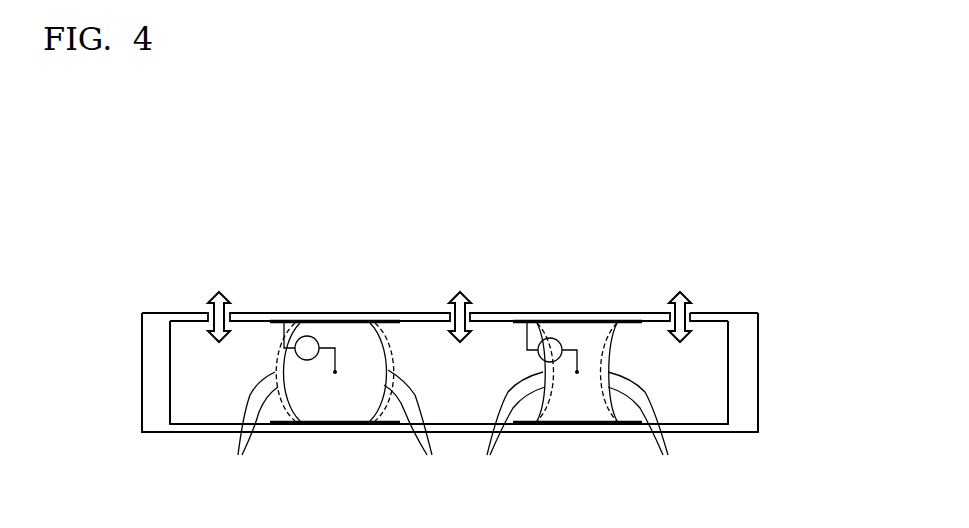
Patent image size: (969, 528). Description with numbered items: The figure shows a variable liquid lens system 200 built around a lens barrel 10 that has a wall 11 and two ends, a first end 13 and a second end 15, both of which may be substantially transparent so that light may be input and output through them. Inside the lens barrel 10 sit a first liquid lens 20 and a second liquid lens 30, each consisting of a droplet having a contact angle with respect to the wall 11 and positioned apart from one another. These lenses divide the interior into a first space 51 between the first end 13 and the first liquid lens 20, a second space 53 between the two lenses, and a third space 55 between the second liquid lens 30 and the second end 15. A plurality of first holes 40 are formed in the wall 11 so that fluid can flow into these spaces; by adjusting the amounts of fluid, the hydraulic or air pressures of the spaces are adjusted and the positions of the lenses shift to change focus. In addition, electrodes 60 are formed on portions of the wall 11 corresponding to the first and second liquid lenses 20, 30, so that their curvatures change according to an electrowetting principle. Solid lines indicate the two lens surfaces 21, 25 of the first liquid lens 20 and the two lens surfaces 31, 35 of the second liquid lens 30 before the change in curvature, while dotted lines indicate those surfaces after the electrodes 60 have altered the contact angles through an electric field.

The variable liquid lens system 200 is at (785, 203).
The lens barrel 10 is at (766, 306).
The wall 11 is at (422, 314).
The first end 13 is at (152, 375).
The second end 15 is at (752, 375).
The first liquid lens 20 is at (336, 323).
The lens surface 21 is at (248, 427).
The lens surface 25 is at (414, 426).
The second liquid lens 30 is at (588, 327).
The lens surface 31 is at (507, 427).
The lens surface 35 is at (645, 427).
The first holes 40 is at (228, 312).
The first space 51 is at (214, 382).
The second space 53 is at (448, 382).
The third space 55 is at (669, 382).
The electrode 60 is at (287, 425).